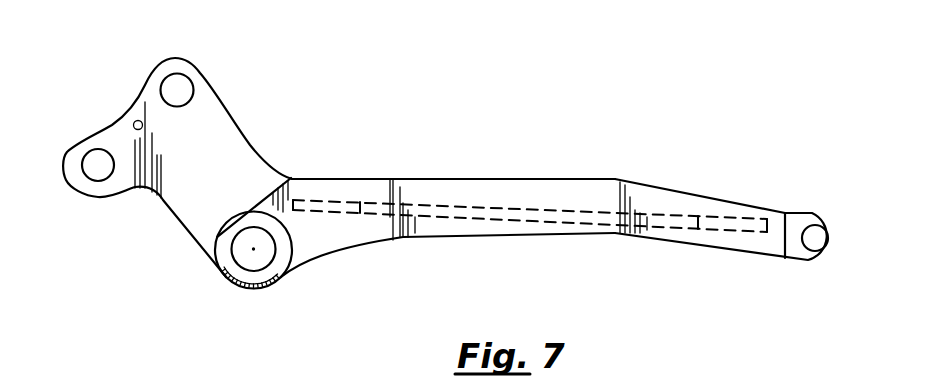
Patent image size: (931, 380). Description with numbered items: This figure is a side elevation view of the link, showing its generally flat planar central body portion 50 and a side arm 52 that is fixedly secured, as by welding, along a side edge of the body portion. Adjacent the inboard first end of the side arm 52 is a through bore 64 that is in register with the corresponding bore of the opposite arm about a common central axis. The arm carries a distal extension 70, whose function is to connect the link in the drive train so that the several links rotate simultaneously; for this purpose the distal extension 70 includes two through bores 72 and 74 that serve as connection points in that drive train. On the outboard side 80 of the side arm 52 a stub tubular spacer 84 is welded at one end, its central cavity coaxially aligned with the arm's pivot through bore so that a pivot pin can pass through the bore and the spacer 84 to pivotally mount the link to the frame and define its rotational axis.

The central body portion 50 is at (456, 204).
The first side arm 52 is at (557, 178).
The through bore 64 is at (813, 233).
The distal extension 70 is at (238, 130).
The through bore 72 is at (178, 83).
The through bore 74 is at (99, 156).
The outboard side 80 is at (325, 253).
The stub tubular spacer 84 is at (230, 263).